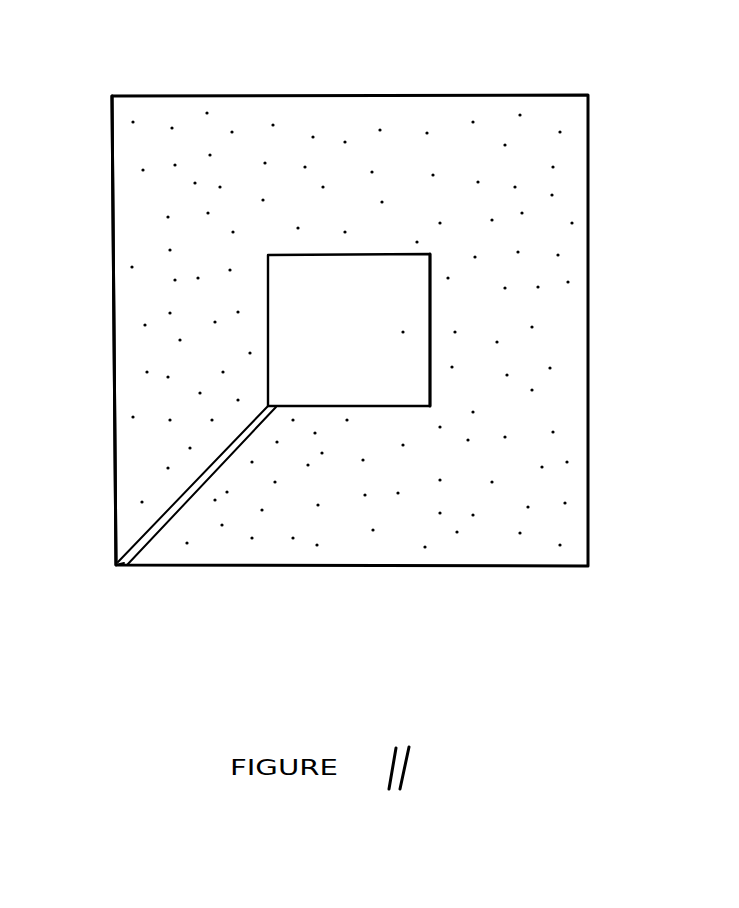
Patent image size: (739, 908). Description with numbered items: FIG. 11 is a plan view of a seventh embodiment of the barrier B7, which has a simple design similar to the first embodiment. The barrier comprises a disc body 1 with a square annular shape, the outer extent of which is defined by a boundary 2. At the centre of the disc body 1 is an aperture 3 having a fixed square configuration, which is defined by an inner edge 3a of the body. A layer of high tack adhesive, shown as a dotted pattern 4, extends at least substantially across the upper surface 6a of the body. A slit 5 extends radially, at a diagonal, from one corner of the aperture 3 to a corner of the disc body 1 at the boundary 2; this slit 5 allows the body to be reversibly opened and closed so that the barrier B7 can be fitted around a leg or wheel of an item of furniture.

The barrier B7 is at (106, 55).
The disc body 1 is at (126, 208).
The boundary 2 is at (105, 336).
The aperture 3 is at (407, 329).
The inner edge 3a is at (439, 396).
The layer of high tack adhesive 4 is at (562, 186).
The slit 5 is at (128, 577).
The upper surface 6a is at (134, 458).